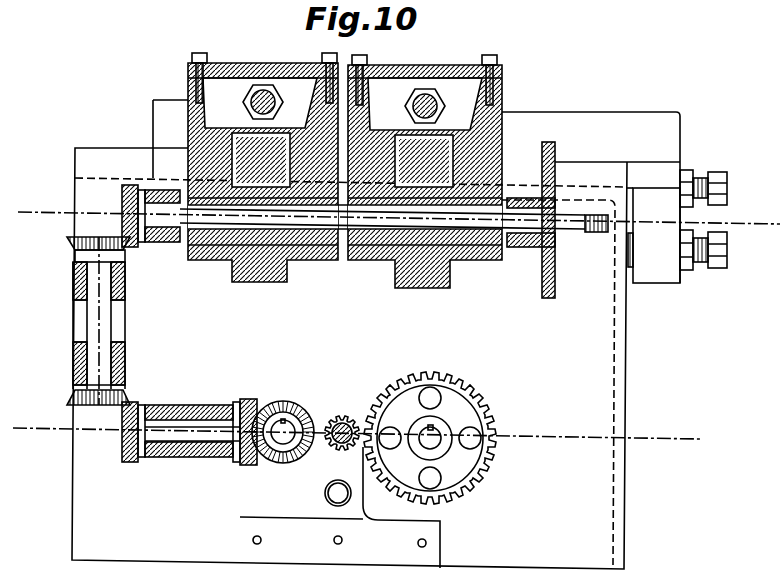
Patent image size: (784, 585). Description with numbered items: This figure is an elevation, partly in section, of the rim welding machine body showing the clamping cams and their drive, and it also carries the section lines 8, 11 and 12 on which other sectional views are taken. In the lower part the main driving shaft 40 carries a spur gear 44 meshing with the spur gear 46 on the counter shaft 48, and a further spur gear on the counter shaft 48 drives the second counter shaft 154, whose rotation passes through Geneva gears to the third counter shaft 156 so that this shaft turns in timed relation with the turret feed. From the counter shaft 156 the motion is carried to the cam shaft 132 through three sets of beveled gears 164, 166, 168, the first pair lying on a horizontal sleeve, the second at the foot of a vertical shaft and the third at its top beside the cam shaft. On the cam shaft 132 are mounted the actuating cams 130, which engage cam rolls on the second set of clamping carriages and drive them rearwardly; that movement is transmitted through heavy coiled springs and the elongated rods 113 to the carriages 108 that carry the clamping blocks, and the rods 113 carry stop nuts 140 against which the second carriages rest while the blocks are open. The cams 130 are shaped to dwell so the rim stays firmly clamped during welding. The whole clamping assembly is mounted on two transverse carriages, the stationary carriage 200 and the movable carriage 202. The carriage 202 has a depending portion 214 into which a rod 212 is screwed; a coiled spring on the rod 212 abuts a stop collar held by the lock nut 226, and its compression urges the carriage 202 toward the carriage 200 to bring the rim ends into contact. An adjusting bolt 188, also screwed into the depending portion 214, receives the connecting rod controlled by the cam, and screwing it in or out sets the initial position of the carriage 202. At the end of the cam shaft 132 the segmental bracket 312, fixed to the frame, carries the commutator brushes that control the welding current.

The transverse carriage 200 is at (172, 100).
The second carriage 202 is at (640, 108).
The depending portion 214 is at (663, 270).
The rod 212 is at (702, 172).
The lock nut 226 is at (716, 172).
The adjusting bolt 188 is at (722, 268).
The segmental bracket 312 is at (556, 160).
The actuating cams 130 is at (268, 283).
The stop nuts 140 is at (244, 111).
The elongated rods 113 is at (258, 94).
The carriages 108 is at (290, 84).
The cam shaft 132 is at (187, 236).
The beveled gears 168 is at (122, 198).
The beveled gears 166 is at (108, 408).
The beveled gears 164 is at (263, 465).
The third counter shaft 156 is at (285, 430).
The main driving shaft 40 is at (343, 430).
The spur gear 44 is at (325, 458).
The second counter shaft 154 is at (340, 500).
The spur gear 46 is at (466, 466).
The counter shaft 48 is at (441, 436).
The section line 8- 8 is at (42, 233).
The section line 11- 11 is at (33, 455).
The section line 12- 12 is at (485, 300).